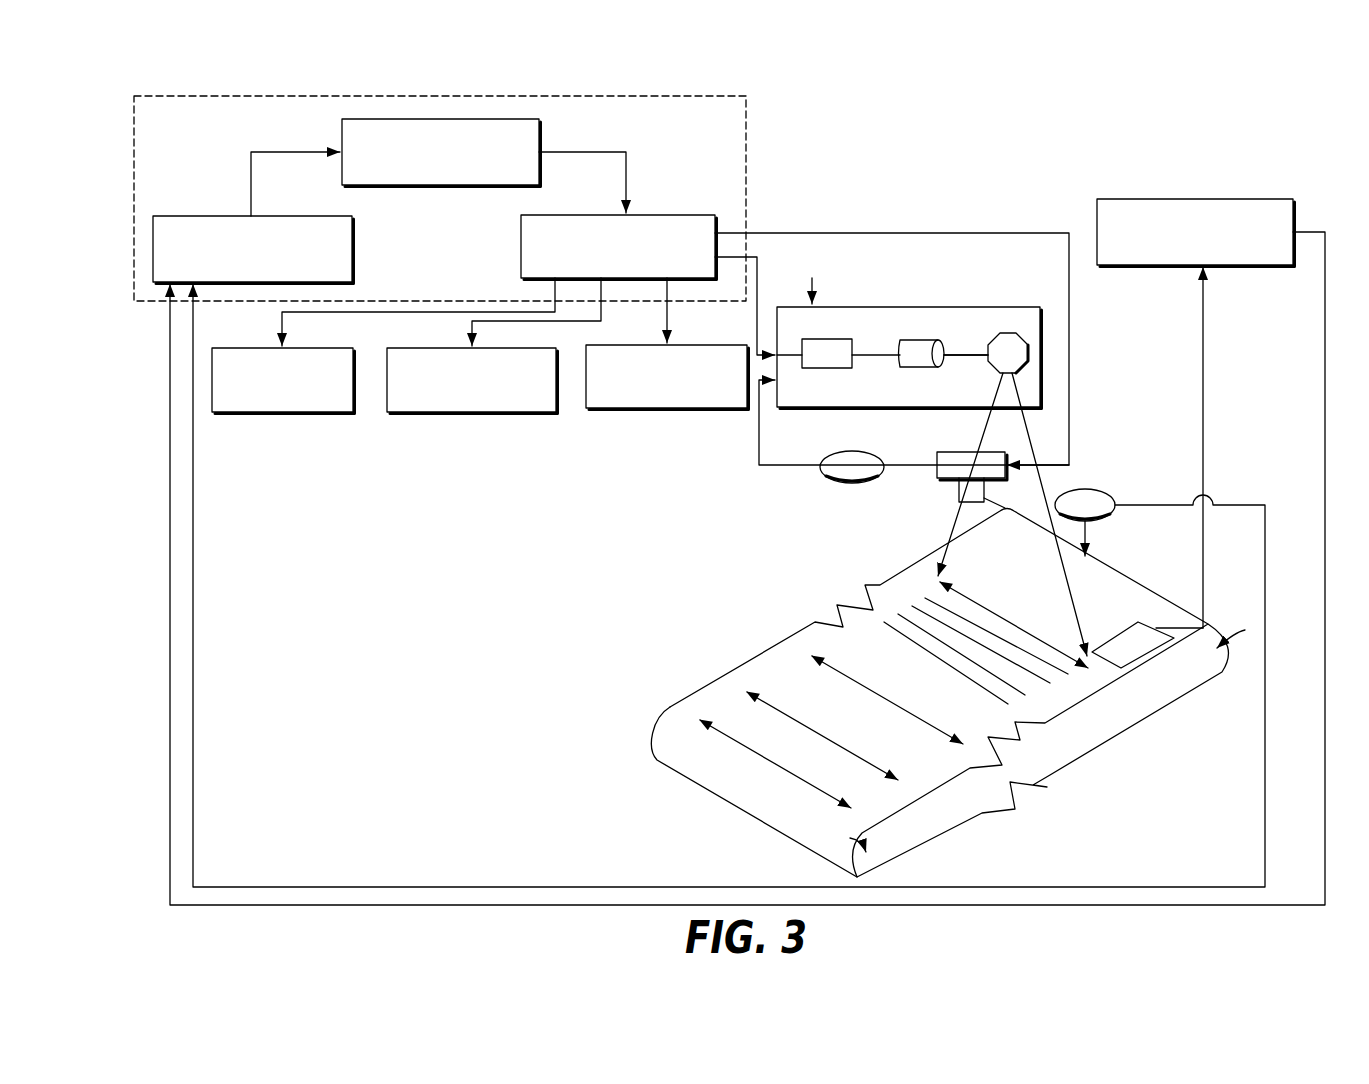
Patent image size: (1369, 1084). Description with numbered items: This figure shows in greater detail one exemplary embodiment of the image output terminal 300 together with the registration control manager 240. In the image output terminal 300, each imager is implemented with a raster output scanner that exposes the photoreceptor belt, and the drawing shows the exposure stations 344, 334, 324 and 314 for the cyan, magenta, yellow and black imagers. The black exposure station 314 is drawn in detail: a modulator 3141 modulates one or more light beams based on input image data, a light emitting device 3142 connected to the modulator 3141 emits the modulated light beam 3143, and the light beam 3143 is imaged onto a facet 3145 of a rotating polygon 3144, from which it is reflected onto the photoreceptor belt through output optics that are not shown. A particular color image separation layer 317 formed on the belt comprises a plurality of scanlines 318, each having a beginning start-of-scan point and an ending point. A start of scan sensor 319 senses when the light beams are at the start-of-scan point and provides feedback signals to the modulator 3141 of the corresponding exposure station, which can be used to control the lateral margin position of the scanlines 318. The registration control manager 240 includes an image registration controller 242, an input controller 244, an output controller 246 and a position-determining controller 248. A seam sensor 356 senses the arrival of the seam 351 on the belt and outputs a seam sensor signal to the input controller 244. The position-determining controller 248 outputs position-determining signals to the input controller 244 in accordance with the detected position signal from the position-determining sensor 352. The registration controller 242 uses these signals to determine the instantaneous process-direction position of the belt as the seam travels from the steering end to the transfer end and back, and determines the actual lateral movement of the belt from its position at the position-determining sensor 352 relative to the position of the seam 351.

The registration control manager 240 is at (746, 150).
The image registration controller 242 is at (540, 137).
The input controller 244 is at (262, 216).
The output controller 246 is at (648, 215).
The position-determining controller 248 is at (1158, 199).
The exposure station 344 is at (307, 348).
The exposure station 334 is at (395, 348).
The exposure station 324 is at (592, 345).
The exposure station 314 is at (798, 408).
The modulator 3141 is at (815, 339).
The light emitting device 3142 is at (908, 340).
The light beam 3143 is at (963, 353).
The rotating polygon 3144 is at (1018, 353).
The facet 3145 is at (1029, 337).
The start of scan sensor 319 is at (872, 453).
The seam sensor 356 is at (1105, 491).
The seam 351 is at (1090, 558).
The position-determining sensor 352 is at (1140, 622).
The scanline 318 is at (1012, 623).
The color image separation layer 317 is at (1032, 688).
The image output terminal 300 is at (955, 693).